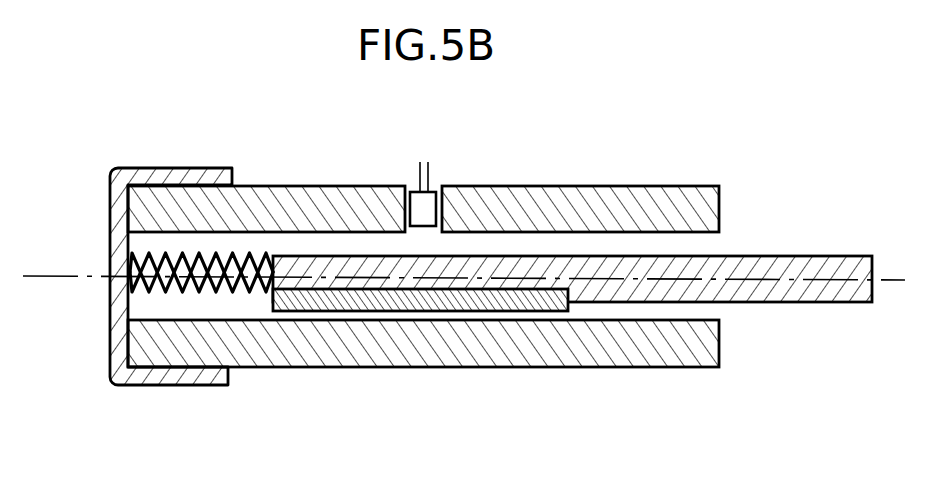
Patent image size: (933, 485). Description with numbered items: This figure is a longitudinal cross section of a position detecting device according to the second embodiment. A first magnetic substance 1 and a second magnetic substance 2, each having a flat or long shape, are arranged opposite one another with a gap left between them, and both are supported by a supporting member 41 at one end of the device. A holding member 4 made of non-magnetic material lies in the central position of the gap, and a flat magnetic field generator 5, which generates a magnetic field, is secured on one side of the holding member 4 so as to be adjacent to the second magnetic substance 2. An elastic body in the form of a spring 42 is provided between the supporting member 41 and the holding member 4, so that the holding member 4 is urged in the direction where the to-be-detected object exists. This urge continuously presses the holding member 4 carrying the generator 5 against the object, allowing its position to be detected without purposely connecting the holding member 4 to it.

The first magnetic substance 1 is at (345, 186).
The second magnetic substance 2 is at (720, 347).
The holding member 4 is at (822, 302).
The magnetic field generator 5 is at (469, 300).
The supporting member 41 is at (110, 201).
The spring 42 is at (235, 293).